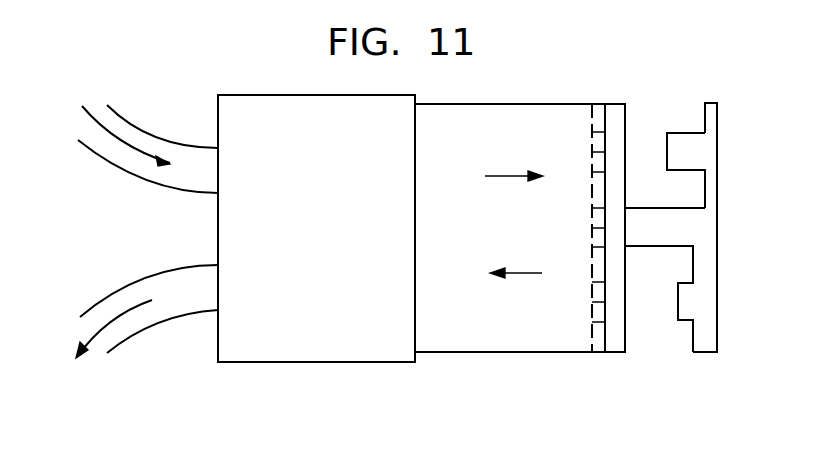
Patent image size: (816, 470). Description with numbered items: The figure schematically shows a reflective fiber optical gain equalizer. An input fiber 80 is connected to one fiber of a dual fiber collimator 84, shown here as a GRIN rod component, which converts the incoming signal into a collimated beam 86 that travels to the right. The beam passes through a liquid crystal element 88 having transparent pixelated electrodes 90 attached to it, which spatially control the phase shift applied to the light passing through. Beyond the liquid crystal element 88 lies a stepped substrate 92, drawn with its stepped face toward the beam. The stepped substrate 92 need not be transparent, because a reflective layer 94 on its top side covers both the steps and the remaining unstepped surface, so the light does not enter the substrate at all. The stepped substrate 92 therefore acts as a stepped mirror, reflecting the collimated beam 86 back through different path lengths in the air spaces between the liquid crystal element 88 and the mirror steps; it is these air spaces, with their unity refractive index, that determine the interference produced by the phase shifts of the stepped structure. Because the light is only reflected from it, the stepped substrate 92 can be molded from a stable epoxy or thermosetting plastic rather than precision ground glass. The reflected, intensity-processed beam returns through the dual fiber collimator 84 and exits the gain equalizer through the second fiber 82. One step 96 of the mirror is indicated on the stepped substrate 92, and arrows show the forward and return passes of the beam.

The inlet duct 80 is at (153, 126).
The second fiber 82 is at (165, 322).
The dual fiber collimator 84 is at (325, 352).
The collimated beam 86 is at (467, 335).
The liquid crystal element 88 is at (615, 353).
The transparent pixelated electrodes 90 is at (592, 290).
The stepped substrate 92 is at (698, 353).
The reflective layer 94 is at (705, 118).
The protrusion 96 is at (667, 153).